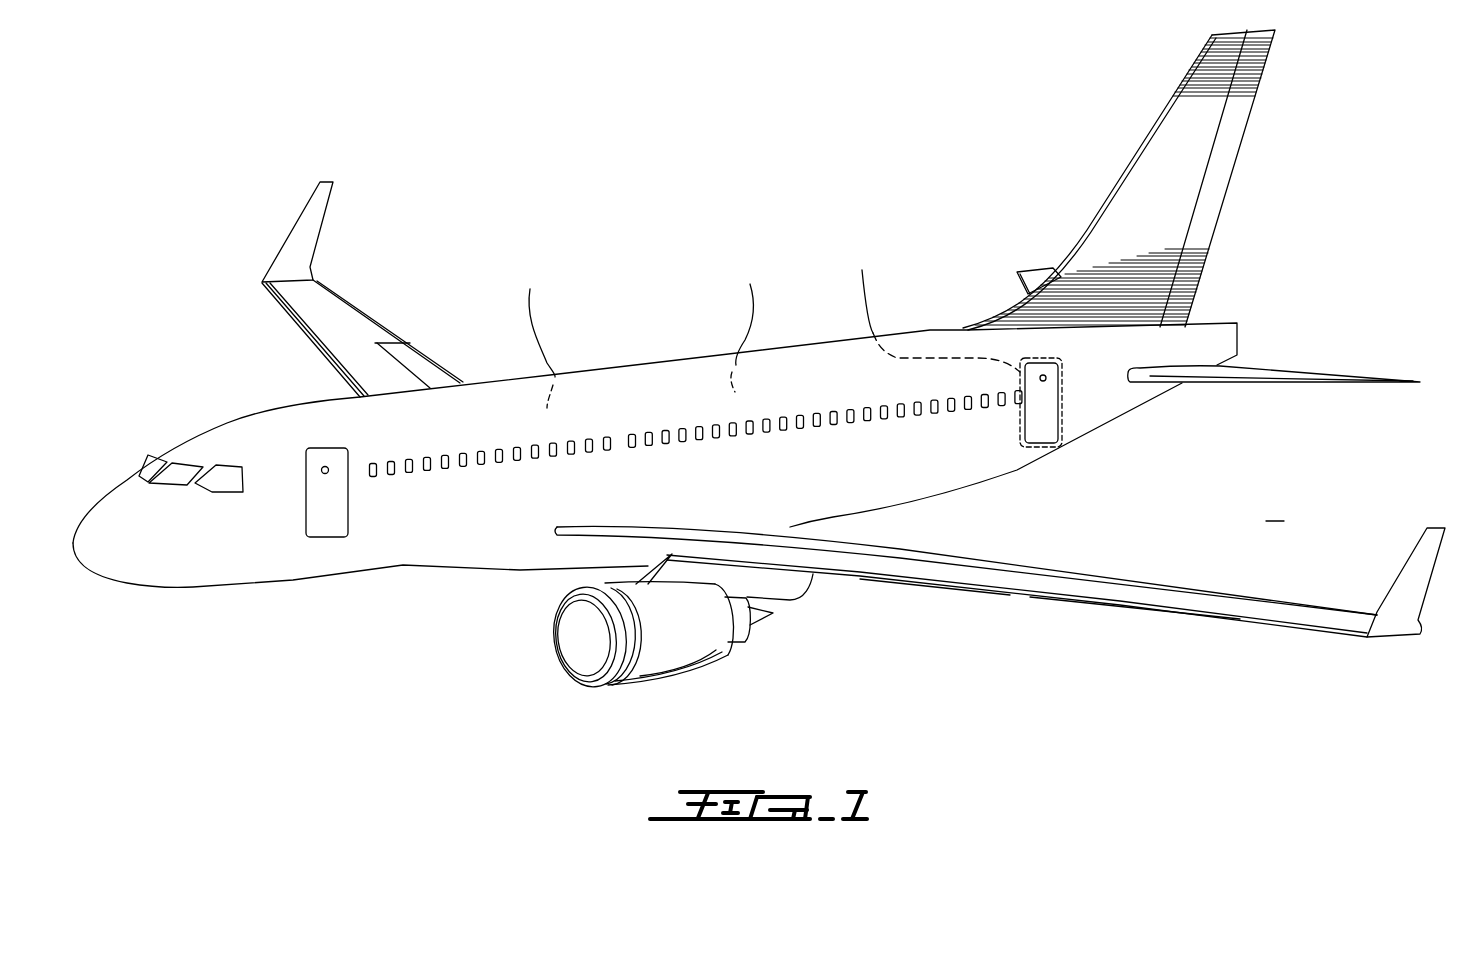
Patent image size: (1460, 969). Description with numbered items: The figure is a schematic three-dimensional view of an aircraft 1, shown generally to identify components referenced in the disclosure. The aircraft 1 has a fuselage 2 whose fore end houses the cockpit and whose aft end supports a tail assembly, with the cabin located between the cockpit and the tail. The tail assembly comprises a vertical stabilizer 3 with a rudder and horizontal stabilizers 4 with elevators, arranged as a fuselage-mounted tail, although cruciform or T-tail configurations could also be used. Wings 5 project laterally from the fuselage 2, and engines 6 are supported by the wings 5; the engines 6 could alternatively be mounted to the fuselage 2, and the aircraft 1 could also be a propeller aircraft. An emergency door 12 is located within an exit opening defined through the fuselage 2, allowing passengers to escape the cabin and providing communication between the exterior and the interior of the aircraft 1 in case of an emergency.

The aircraft 1 is at (628, 276).
The fuselage 2 is at (403, 541).
The vertical stabilizer 3 is at (1155, 172).
The horizontal stabilizers 4 is at (1033, 280).
The wings 5 is at (345, 333).
The engines 6 is at (708, 650).
The emergency door 12 is at (1058, 426).